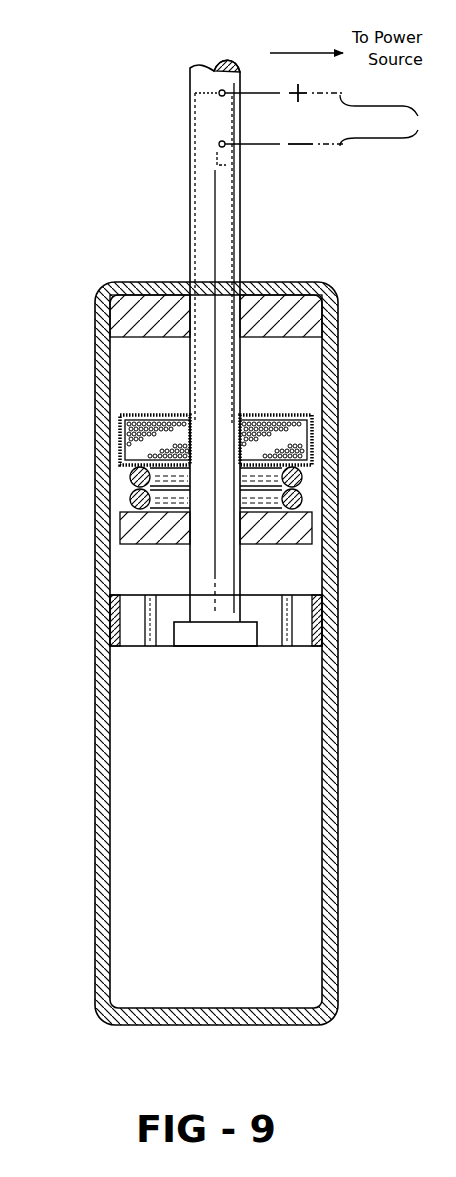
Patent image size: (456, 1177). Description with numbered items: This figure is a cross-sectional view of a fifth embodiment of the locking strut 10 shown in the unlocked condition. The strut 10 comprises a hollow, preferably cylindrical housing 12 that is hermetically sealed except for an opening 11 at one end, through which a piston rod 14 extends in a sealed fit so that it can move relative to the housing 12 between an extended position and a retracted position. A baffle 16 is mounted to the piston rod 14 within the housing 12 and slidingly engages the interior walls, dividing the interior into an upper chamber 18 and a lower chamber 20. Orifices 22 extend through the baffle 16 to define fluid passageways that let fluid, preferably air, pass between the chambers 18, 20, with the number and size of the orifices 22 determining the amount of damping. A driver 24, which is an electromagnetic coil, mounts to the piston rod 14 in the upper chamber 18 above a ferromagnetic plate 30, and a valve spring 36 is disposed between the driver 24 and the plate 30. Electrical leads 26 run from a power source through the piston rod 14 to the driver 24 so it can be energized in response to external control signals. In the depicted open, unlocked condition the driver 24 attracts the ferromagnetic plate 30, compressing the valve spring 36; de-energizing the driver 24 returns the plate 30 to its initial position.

The locking strut 10 is at (100, 190).
The opening 11 is at (228, 292).
The housing 12 is at (95, 362).
The piston rod 14 is at (195, 215).
The baffle 16 is at (322, 633).
The upper chamber 18 is at (284, 374).
The lower chamber 20 is at (286, 828).
The orifice 22 is at (288, 614).
The driver 24 is at (286, 437).
The electrical leads 26 is at (309, 115).
The ferromagnetic plate 30 is at (302, 530).
The valve spring 36 is at (300, 503).